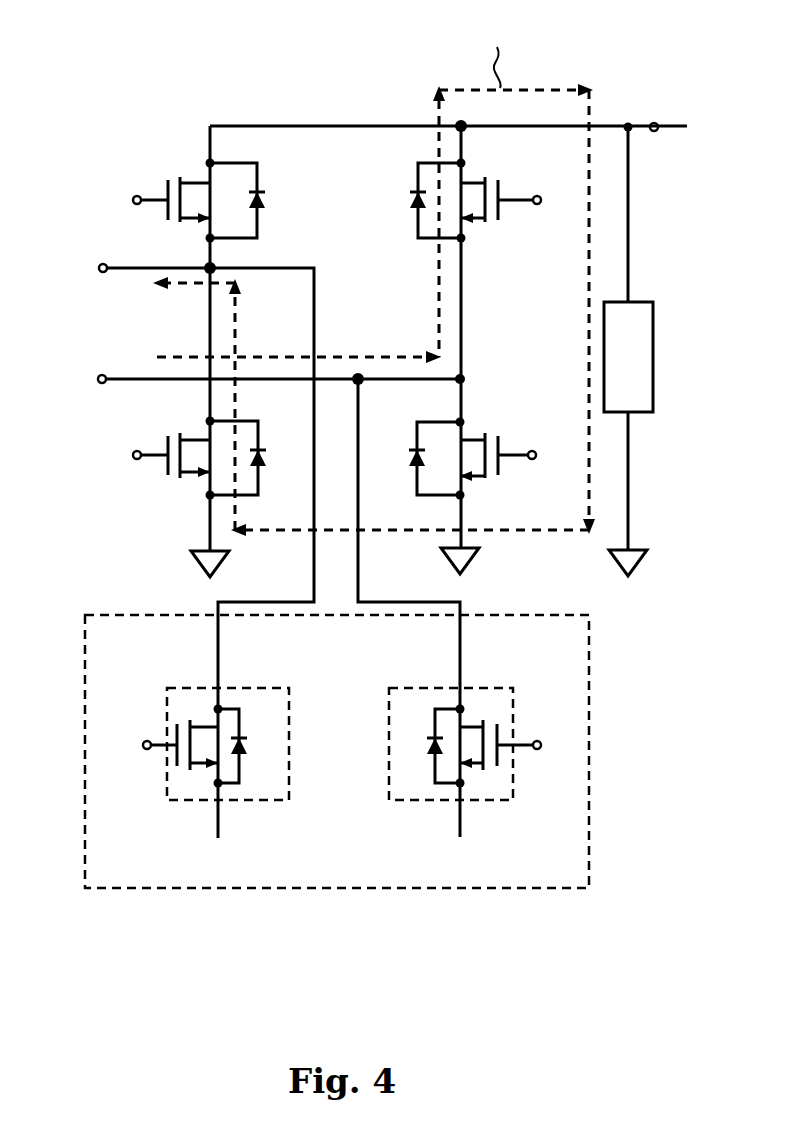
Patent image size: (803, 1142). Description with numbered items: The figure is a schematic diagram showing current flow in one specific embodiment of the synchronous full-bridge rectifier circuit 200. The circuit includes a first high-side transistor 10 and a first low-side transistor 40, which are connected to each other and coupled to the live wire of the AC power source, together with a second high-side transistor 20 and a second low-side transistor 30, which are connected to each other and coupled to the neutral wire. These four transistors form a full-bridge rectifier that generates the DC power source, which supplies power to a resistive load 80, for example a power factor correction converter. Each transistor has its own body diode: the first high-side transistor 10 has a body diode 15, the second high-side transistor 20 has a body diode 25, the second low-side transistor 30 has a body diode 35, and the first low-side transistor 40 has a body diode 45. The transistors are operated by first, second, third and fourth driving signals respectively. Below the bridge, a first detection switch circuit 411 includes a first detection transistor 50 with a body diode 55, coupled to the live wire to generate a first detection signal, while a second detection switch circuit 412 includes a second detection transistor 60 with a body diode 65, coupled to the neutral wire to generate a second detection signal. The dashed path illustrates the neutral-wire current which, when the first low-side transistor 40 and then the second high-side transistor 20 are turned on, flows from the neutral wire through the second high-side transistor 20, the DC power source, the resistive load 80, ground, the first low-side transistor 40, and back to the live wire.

The synchronous full-bridge rectifier circuit 200 is at (135, 42).
The first high-side transistor 10 is at (171, 182).
The body diode 15 is at (252, 200).
The second high-side transistor 20 is at (501, 182).
The body diode 25 is at (420, 200).
The second low-side transistor 30 is at (498, 444).
The body diode 35 is at (420, 458).
The first low-side transistor 40 is at (171, 443).
The body diode 45 is at (252, 458).
The first detection transistor 50 is at (180, 732).
The body diode 55 is at (249, 746).
The second detection transistor 60 is at (500, 732).
The body diode 65 is at (428, 746).
The resistive load 80 is at (640, 369).
The first detection switch circuit 411 is at (185, 686).
The second detection switch circuit 412 is at (505, 686).